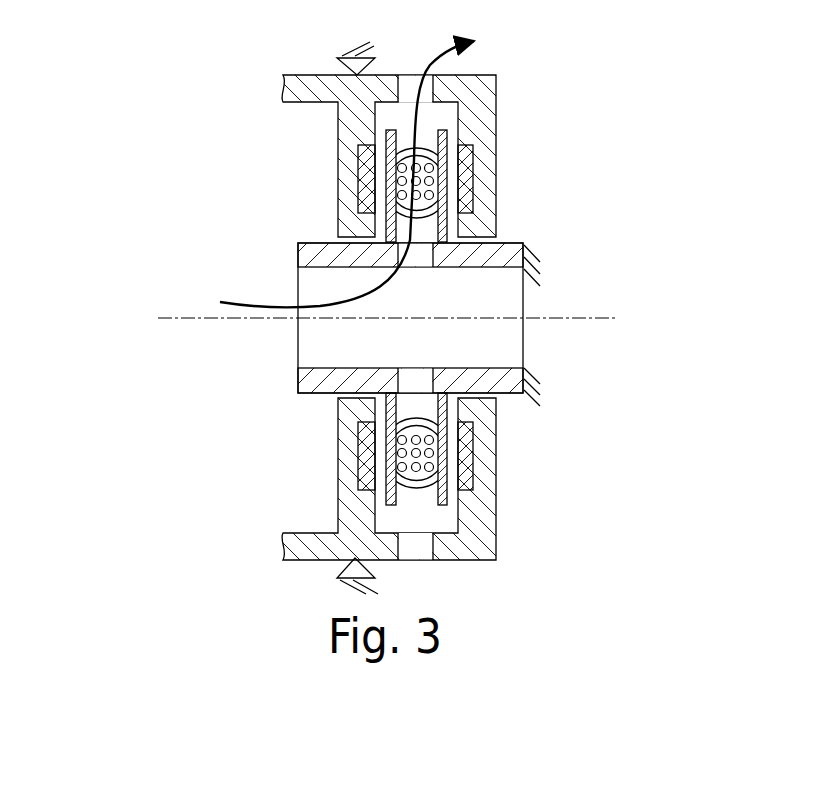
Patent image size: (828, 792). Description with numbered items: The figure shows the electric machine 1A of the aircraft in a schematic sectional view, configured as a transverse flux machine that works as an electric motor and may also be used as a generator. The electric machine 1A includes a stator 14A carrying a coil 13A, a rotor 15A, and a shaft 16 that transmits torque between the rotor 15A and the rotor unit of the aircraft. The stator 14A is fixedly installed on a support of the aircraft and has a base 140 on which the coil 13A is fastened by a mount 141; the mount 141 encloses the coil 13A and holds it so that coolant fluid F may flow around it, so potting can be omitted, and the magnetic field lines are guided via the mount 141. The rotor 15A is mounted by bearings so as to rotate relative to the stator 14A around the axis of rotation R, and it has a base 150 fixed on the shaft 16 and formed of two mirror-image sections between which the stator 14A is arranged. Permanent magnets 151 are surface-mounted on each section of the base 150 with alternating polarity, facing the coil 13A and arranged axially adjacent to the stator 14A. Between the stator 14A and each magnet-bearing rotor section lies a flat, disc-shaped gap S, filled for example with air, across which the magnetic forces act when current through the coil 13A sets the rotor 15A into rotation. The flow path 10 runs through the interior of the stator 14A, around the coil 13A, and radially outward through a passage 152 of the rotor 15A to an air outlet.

The electric machine 1A is at (129, 90).
The shaft 16 is at (310, 92).
The rotor 15A is at (503, 168).
The passage 152 is at (408, 88).
The stator 14A is at (507, 252).
The mount 141 is at (408, 140).
The base 140 is at (448, 134).
The coil 13A is at (446, 168).
The base 150 is at (500, 213).
The magnets 151 is at (367, 178).
The flow path 10 is at (371, 297).
The gap S is at (453, 124).
The coolant fluid F is at (333, 354).
The axis of rotation R is at (607, 321).